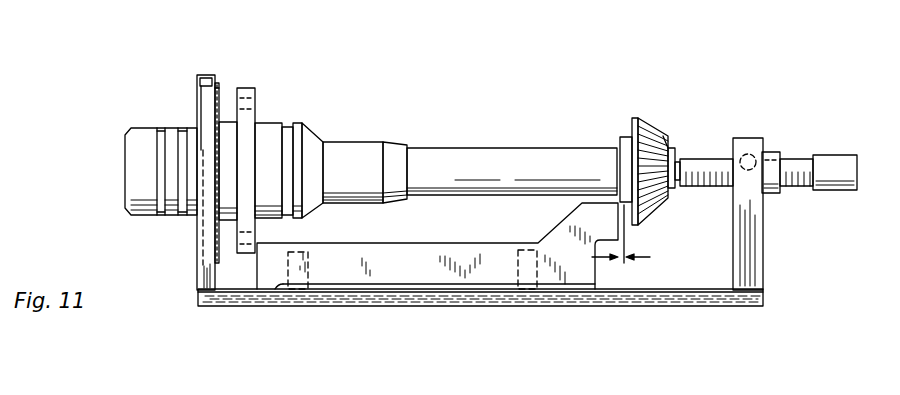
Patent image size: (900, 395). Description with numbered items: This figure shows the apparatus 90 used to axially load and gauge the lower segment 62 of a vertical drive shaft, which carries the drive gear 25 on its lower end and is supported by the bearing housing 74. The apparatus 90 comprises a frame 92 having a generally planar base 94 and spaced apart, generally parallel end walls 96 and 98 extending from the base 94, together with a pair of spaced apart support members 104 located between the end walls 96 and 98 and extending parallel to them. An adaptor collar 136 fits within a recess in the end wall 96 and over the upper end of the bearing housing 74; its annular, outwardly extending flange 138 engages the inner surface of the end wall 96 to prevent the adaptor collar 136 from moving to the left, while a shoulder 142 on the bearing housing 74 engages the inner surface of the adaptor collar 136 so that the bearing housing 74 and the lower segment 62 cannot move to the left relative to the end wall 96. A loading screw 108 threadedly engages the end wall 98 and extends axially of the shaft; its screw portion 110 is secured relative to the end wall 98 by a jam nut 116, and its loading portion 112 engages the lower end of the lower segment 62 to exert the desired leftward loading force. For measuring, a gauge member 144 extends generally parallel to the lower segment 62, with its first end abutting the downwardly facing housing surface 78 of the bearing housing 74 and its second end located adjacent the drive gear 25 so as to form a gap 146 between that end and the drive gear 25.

The drive gear 25 is at (659, 97).
The lower segment 62 is at (467, 139).
The bearing housing 74 is at (150, 119).
The housing surface 78 is at (255, 117).
The apparatus 90 is at (509, 217).
The frame 92 is at (542, 290).
The base 94 is at (702, 292).
The end wall 96 is at (200, 270).
The end wall 98 is at (740, 207).
The support members 104 is at (310, 250).
The loading screw 108 is at (806, 114).
The screw portion 110 is at (847, 144).
The loading portion 112 is at (667, 143).
The jam nut 116 is at (771, 194).
The adaptor collar 136 is at (252, 41).
The flange 138 is at (219, 90).
The shoulder 142 is at (196, 233).
The gauge member 144 is at (427, 236).
The gap 146 is at (642, 237).